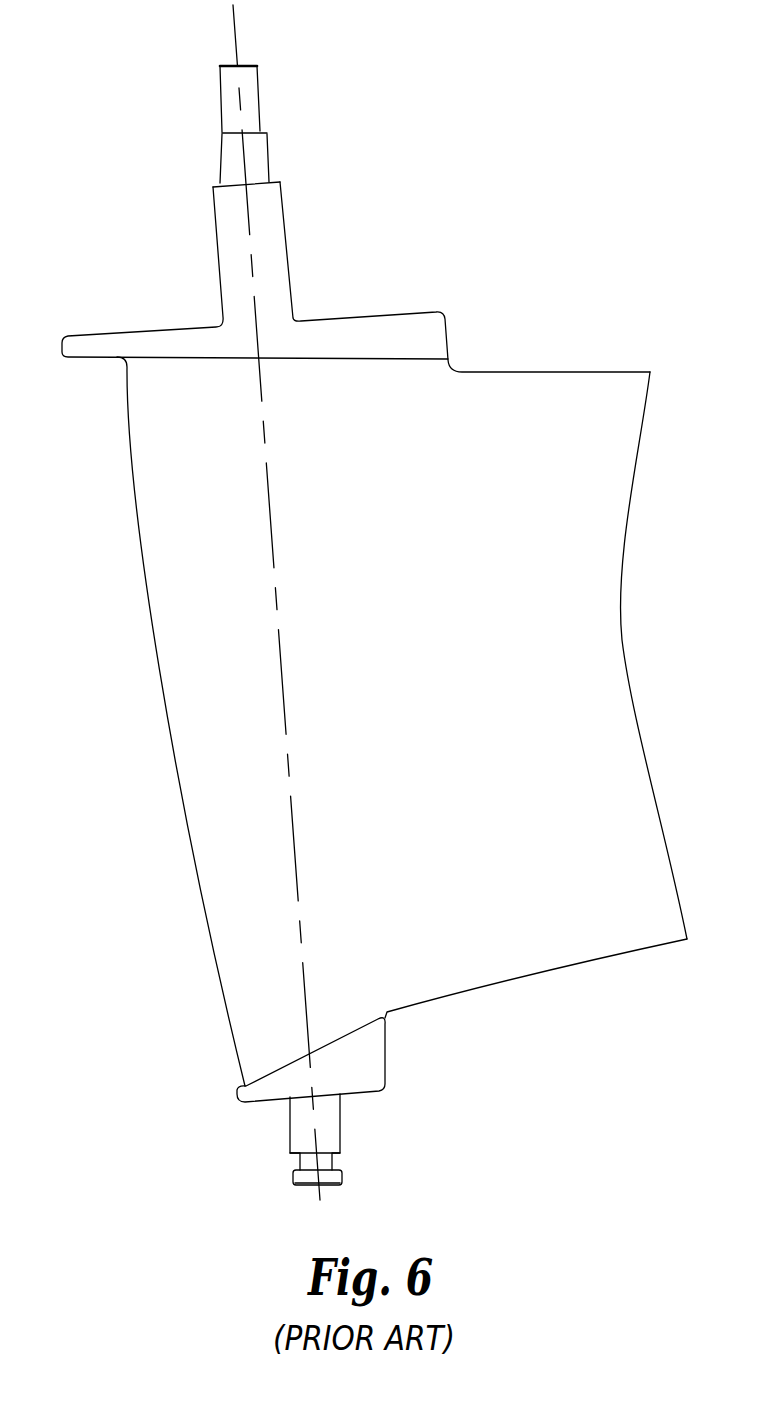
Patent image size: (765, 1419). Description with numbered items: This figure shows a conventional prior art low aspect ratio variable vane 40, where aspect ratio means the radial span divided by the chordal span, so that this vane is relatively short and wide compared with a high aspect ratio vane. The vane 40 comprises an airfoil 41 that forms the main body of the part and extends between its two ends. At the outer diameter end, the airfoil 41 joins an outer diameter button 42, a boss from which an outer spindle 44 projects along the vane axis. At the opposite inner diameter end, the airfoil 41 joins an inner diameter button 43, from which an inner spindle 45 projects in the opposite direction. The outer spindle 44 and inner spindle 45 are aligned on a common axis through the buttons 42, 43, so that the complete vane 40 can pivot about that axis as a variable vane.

The low aspect ratio variable vane 40 is at (374, 602).
The airfoil 41 is at (178, 713).
The outer diameter button 42 is at (160, 347).
The inner diameter button 43 is at (267, 1092).
The outer spindle 44 is at (221, 96).
The inner spindle 45 is at (342, 1142).